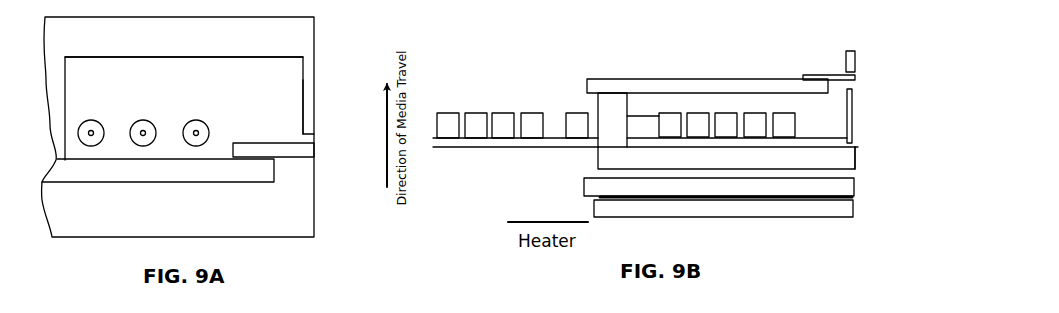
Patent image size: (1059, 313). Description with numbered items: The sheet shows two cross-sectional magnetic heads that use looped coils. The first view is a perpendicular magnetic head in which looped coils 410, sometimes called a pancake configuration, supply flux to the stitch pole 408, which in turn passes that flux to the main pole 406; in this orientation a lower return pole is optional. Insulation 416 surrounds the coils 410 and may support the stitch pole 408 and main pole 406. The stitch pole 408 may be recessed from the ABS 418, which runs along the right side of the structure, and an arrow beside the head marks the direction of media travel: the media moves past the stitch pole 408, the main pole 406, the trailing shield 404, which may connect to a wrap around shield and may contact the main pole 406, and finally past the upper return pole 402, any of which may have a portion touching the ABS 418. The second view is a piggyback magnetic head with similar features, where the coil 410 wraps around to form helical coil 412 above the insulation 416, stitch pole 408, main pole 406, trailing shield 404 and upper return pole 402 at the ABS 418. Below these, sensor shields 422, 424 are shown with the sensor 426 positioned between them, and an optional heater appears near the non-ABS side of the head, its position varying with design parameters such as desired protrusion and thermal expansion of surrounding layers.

In FIG. 9A, the upper return pole 402 is at (245, 41).
In FIG. 9B, the upper return pole 402 is at (857, 62).
In FIG. 9A, the trailing shield 404 is at (314, 80).
In FIG. 9B, the trailing shield 404 is at (854, 120).
In FIG. 9A, the main pole 406 is at (314, 147).
In FIG. 9B, the main pole 406 is at (820, 75).
In FIG. 9A, the stitch pole 408 is at (201, 178).
In FIG. 9B, the stitch pole 408 is at (728, 79).
In FIG. 9A, the looped coils 410 is at (89, 119).
In FIG. 9B, the looped coils 410 is at (780, 112).
In FIG. 9B, the helical coil 412 is at (442, 112).
In FIG. 9A, the insulation 416 is at (273, 111).
In FIG. 9B, the insulation 416 is at (763, 167).
In FIG. 9A, the ABS 418 is at (318, 28).
In FIG. 9B, the ABS 418 is at (858, 157).
In FIG. 9B, the sensor shield 422 is at (584, 188).
In FIG. 9B, the sensor shield 424 is at (594, 205).
In FIG. 9B, the sensor 426 is at (853, 192).